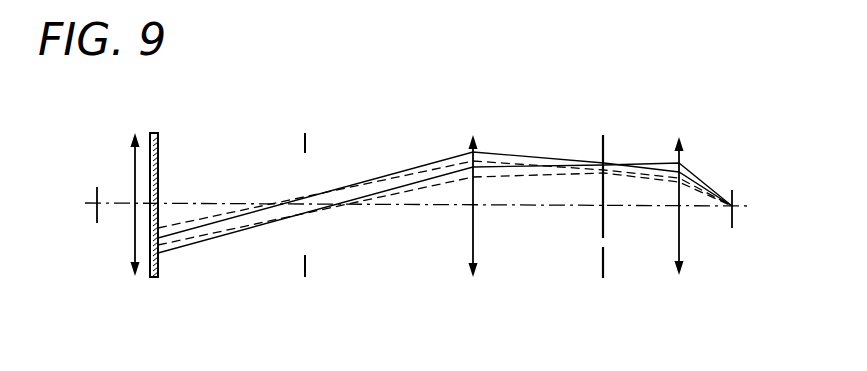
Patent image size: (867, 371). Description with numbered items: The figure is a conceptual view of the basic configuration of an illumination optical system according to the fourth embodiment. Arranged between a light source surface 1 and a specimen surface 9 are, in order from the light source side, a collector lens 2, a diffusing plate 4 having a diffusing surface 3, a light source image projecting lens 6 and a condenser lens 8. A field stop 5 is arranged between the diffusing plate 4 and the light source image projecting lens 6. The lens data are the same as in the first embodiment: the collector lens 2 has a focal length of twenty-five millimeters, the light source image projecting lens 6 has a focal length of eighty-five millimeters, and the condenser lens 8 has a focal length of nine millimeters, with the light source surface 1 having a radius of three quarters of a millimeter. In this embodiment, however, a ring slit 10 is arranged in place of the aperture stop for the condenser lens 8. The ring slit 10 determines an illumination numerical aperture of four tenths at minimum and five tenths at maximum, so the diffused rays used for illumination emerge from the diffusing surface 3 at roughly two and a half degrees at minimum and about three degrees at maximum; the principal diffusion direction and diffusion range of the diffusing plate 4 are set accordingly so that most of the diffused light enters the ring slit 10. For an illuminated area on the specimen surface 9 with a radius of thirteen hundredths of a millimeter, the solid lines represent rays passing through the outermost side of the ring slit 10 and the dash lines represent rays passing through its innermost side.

The light source surface 1 is at (96, 187).
The collector lens 2 is at (133, 132).
The diffusing surface 3 is at (170, 138).
The diffusing plate 4 is at (152, 131).
The field stop 5 is at (304, 140).
The light source image projecting lens 6 is at (471, 142).
The condenser lens 8 is at (677, 142).
The specimen surface 9 is at (734, 190).
The ring slit 10 is at (602, 140).